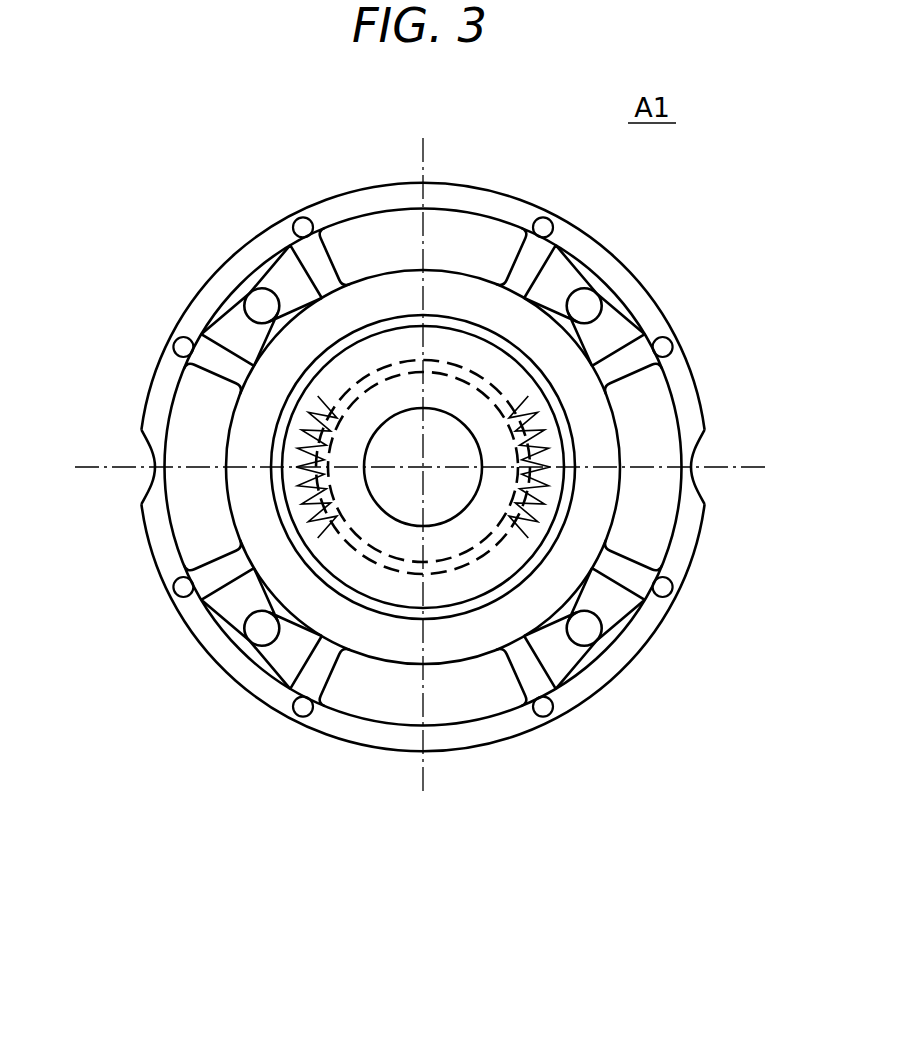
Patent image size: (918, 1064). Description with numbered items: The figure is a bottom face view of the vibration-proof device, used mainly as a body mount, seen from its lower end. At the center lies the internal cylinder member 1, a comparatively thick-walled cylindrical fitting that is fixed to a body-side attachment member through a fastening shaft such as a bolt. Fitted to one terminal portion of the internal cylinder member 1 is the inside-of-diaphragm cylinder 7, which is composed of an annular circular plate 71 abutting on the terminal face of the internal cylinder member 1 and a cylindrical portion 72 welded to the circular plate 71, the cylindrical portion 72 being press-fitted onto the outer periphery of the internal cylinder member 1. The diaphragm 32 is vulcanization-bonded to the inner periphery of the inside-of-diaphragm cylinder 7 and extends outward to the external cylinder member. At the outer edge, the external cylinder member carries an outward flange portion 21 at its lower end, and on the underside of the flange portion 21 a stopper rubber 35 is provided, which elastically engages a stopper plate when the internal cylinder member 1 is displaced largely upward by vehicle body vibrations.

The internal cylinder member 1 is at (497, 447).
The outward flange portion 21 is at (643, 627).
The diaphragm 32 is at (245, 443).
The stopper rubber 35 is at (255, 632).
The inside-of-diaphragm cylinder 7 is at (423, 640).
The annular circular plate 71 is at (445, 548).
The cylindrical portion 72 is at (387, 563).